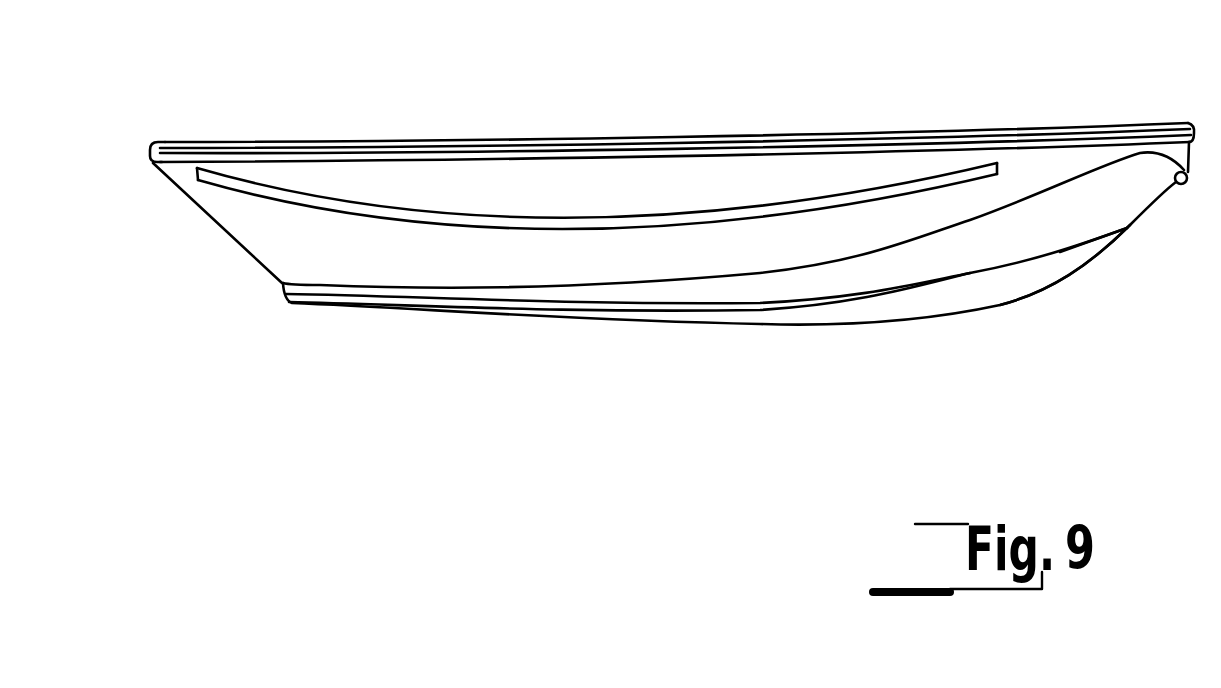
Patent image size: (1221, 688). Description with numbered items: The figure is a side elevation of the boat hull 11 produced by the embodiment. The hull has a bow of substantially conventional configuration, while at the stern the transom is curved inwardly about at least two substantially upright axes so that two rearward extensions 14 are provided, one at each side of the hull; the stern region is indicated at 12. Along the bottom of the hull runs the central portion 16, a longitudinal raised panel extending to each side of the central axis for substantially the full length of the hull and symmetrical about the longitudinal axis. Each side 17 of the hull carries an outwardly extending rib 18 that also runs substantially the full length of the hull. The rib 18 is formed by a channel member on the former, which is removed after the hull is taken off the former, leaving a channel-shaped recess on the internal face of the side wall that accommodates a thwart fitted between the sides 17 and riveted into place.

The boat hull 11 is at (680, 139).
The stern 12 is at (1115, 221).
The rearward extension 14 is at (178, 141).
The central portion 16 is at (808, 313).
The side of the hull 17 is at (677, 256).
The rib 18 is at (570, 226).